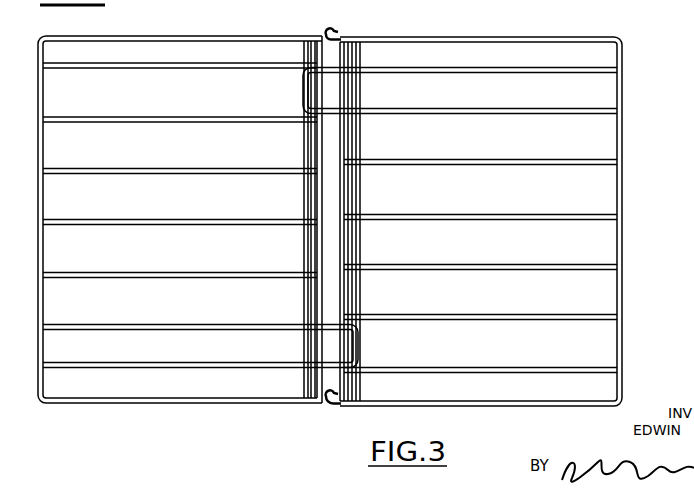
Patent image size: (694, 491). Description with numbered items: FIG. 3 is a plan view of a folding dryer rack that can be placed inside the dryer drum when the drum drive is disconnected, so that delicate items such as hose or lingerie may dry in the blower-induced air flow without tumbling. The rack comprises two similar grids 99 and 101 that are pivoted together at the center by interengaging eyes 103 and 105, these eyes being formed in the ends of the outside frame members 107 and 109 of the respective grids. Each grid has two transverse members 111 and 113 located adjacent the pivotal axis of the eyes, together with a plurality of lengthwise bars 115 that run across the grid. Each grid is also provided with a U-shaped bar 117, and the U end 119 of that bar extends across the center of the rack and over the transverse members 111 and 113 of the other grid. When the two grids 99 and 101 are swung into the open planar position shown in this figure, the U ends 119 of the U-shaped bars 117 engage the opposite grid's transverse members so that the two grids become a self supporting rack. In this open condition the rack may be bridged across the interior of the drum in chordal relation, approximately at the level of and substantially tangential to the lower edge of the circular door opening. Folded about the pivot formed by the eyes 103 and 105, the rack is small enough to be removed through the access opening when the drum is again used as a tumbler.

The grid 99 is at (180, 243).
The grid 101 is at (481, 234).
The eye 103 is at (320, 402).
The eye 105 is at (336, 28).
The outside frame member 107 is at (170, 404).
The outside frame member 109 is at (498, 407).
The transverse member 111 is at (312, 130).
The transverse member 113 is at (305, 151).
The lengthwise bar 115 is at (168, 174).
The U-shaped bar 117 is at (506, 114).
The U end 119 is at (300, 93).